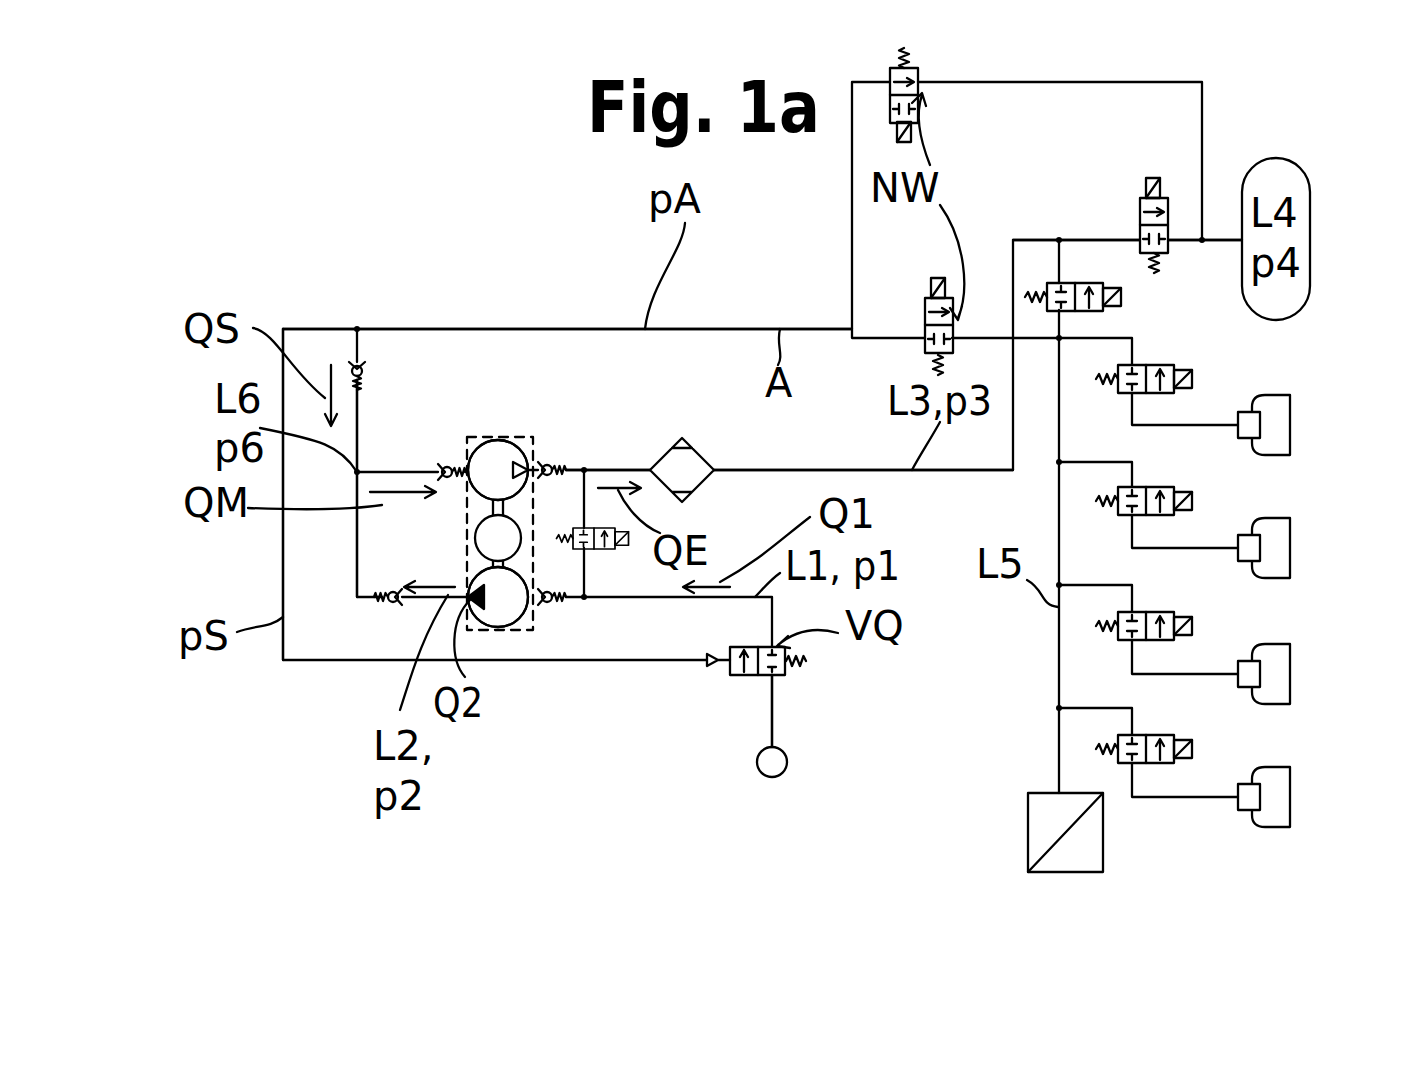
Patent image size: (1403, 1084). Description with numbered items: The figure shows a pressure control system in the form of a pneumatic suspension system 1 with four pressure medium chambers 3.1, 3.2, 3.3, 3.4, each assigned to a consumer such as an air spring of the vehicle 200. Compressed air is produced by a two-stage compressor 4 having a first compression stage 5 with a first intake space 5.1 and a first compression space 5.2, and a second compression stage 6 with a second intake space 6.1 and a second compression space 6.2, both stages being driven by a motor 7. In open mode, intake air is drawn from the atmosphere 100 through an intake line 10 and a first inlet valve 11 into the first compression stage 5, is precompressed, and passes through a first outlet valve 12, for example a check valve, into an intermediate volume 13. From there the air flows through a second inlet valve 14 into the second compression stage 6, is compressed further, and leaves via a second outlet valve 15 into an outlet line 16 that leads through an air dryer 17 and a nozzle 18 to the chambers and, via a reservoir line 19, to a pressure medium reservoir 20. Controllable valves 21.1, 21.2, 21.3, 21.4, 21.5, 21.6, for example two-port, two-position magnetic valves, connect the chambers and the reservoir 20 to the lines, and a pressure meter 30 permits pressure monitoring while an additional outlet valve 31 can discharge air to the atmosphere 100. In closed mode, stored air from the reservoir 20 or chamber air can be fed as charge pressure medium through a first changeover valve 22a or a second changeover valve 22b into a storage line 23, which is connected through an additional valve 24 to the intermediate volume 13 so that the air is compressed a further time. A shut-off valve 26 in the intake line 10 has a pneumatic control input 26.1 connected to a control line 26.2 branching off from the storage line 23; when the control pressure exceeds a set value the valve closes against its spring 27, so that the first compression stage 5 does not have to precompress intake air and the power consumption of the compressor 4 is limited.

The pneumatic suspension system 1 is at (503, 158).
The two-stage compressor 4 is at (508, 435).
The first compression stage 5 is at (514, 628).
The first intake space 5.1 is at (520, 625).
The first compression space 5.2 is at (500, 628).
The second compression stage 6 is at (488, 447).
The second intake space 6.1 is at (480, 460).
The second compression space 6.2 is at (530, 460).
The motor 7 is at (480, 537).
The intake line 10 is at (770, 715).
The first inlet valve 11 is at (552, 607).
The first outlet valve 12 is at (385, 598).
The intermediate volume 13 is at (357, 543).
The second inlet valve 14 is at (447, 462).
The second outlet valve 15 is at (540, 463).
The outlet line 16 is at (623, 470).
The air dryer 17 is at (702, 487).
The nozzle 18 is at (838, 482).
The reservoir line 19 is at (1088, 240).
The pressure medium reservoir 20 is at (1290, 300).
The controllable valve 21.1 is at (1172, 365).
The controllable valve 21.2 is at (1172, 487).
The controllable valve 21.3 is at (1172, 612).
The controllable valve 21.4 is at (1172, 737).
The fifth valve 21.5 is at (1183, 187).
The sixth valve 21.6 is at (1103, 308).
The first changeover valve 22a is at (895, 123).
The second changeover valve 22b is at (928, 300).
The storage line 23 is at (372, 327).
The additional valve 24 is at (352, 363).
The shut-off valve 26 is at (784, 677).
The pneumatic control input 26.1 is at (707, 660).
The control line 26.2 is at (283, 642).
The spring 27 is at (807, 662).
The pressure meter 30 is at (1032, 835).
The additional outlet valve 31 is at (608, 550).
The atmosphere 100 is at (783, 772).
The vehicle 200 is at (942, 820).
The pressure medium chamber 3.1 is at (1280, 428).
The pressure medium chamber 3.2 is at (1280, 551).
The pressure medium chamber 3.3 is at (1280, 677).
The pressure medium chamber 3.4 is at (1280, 800).